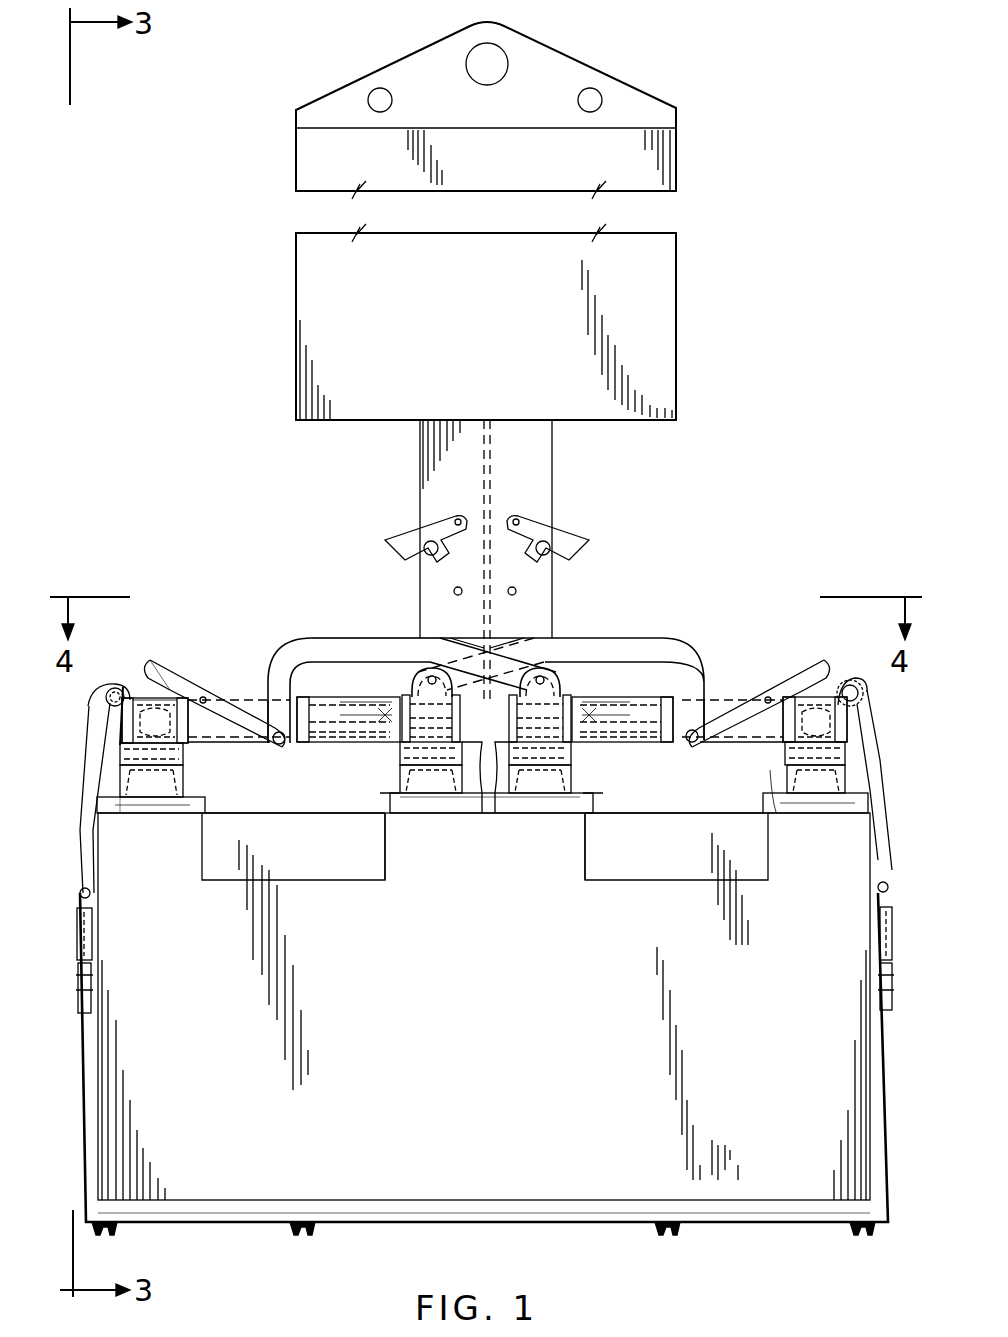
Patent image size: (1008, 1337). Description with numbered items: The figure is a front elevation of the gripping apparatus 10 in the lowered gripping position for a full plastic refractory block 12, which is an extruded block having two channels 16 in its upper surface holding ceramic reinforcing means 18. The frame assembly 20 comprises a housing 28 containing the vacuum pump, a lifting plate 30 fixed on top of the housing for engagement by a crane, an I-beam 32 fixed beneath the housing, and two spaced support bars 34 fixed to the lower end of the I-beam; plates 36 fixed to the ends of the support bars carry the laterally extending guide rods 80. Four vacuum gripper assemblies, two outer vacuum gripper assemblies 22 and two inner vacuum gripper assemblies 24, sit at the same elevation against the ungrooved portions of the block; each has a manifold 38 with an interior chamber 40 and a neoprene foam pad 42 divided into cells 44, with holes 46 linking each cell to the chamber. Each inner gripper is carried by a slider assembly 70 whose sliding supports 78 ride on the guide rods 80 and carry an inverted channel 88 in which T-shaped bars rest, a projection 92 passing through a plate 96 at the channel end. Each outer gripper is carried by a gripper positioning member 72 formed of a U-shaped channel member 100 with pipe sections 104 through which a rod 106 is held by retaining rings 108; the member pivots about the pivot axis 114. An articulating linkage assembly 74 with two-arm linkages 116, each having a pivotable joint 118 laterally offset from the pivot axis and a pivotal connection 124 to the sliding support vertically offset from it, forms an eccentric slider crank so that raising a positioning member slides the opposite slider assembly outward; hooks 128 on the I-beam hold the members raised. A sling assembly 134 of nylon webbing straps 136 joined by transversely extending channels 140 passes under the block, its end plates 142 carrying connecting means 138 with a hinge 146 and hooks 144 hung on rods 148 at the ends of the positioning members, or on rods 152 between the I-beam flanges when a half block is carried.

The gripping apparatus 10 is at (775, 284).
The full plastic refractory block 12 is at (494, 990).
The channel 16 is at (345, 880).
The ceramic anchoring or reinforcing means 18 is at (258, 816).
The frame assembly 20 is at (676, 378).
The outer vacuum gripper assembly 22 is at (132, 816).
The inner vacuum gripper assembly 24 is at (408, 824).
The housing 28 is at (678, 410).
The lifting plate 30 is at (628, 96).
The I-beam 32 is at (554, 474).
The support bar 34 is at (618, 697).
The plate 36 is at (300, 700).
The manifold 38 is at (184, 750).
The interior chamber 40 is at (184, 775).
The neoprene foam pad 42 is at (390, 804).
The cell 44 is at (142, 830).
The hole 46 is at (134, 818).
The slider assembly 70 is at (414, 668).
The gripper positioning member 72 is at (262, 752).
The articulating linkage assembly 74 is at (306, 634).
The sliding support 78 is at (400, 748).
The guide rod 80 is at (324, 638).
The inverted channel 88 is at (566, 748).
The projection 92 is at (470, 748).
The plate 96 is at (778, 750).
The U-shaped channel member 100 is at (267, 698).
The pipe section 104 is at (130, 705).
The rod 106 is at (90, 705).
The retaining ring 108 is at (188, 700).
The pivot axis 114 is at (384, 712).
The two-arm linkage 116 is at (206, 697).
The pivotable joint 118 is at (284, 745).
The pivotal connection 124 is at (430, 665).
The hook 128 is at (398, 530).
The sling assembly 134 is at (352, 1244).
The nylon webbing strap 136 is at (470, 1228).
The connecting means 138 is at (880, 728).
The transversely extending channel 140 is at (118, 1232).
The end plate 142 is at (87, 943).
The hook 144 is at (850, 684).
The hinge 146 is at (93, 912).
The rod 148 is at (150, 660).
The rod 152 is at (517, 590).